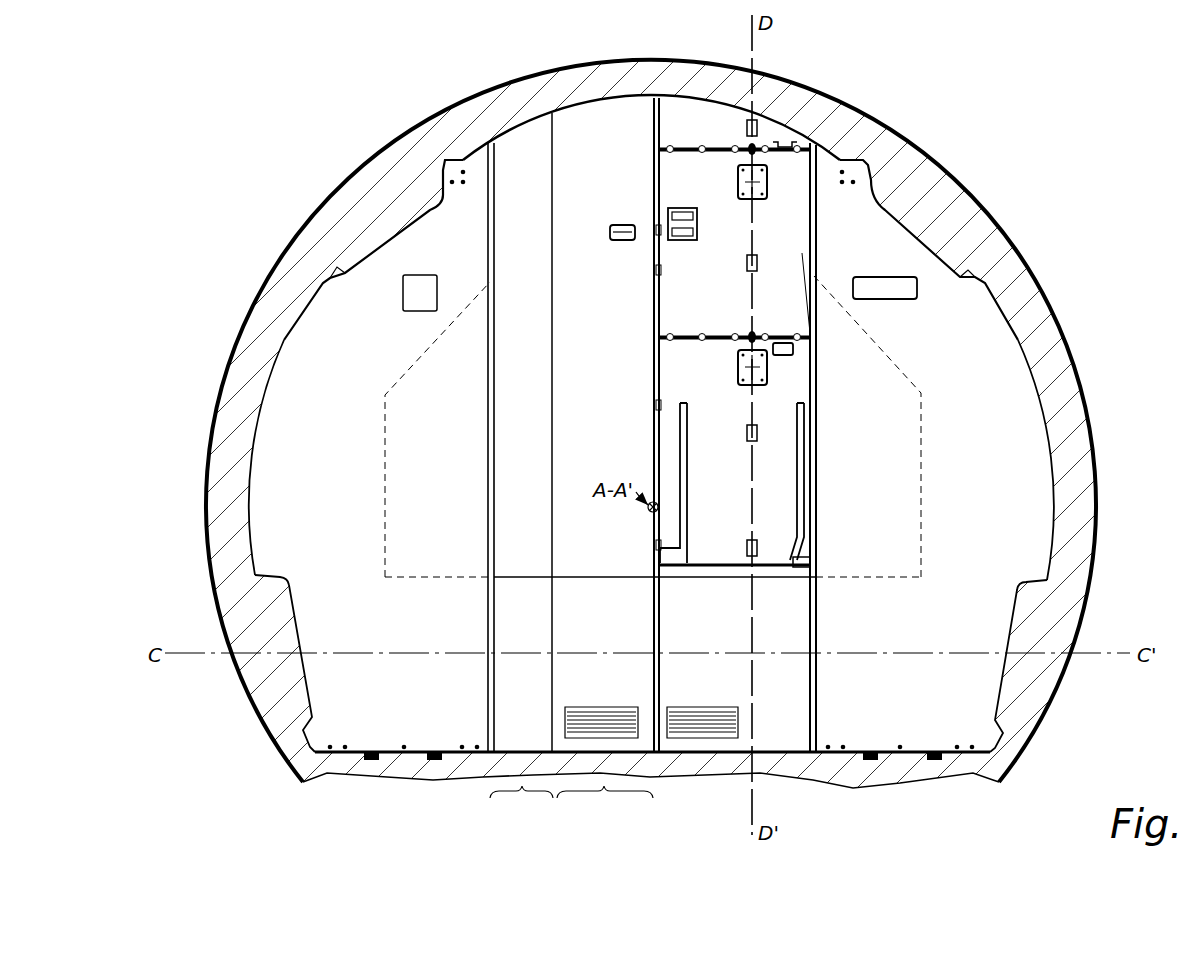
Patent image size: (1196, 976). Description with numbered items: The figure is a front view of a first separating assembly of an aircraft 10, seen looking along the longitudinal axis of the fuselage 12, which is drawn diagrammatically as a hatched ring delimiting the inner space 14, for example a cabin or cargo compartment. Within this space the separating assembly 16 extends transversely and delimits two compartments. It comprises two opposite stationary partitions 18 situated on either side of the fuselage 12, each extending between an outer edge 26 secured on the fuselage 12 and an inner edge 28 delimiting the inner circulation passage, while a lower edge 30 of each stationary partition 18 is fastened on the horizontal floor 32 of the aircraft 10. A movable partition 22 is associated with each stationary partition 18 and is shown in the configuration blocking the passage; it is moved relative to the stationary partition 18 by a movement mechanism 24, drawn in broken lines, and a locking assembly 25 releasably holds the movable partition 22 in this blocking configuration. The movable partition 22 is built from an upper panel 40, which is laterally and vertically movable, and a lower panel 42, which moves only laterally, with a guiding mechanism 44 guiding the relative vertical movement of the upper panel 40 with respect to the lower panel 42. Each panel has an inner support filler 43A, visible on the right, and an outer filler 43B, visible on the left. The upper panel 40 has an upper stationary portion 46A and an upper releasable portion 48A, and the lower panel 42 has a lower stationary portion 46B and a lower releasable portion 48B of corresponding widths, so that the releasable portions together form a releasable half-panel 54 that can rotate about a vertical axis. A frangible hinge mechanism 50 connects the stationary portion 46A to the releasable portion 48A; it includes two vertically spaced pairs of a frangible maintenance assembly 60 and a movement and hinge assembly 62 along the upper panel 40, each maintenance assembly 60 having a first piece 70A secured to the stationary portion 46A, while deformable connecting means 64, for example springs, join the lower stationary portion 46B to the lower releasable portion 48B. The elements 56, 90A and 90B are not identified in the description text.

The aircraft 10 is at (1060, 157).
The fuselage 12 is at (1017, 297).
The inner space 14 is at (689, 309).
The separating assembly 16 is at (872, 212).
The stationary partition 18 is at (267, 480).
The movable partition 22 is at (514, 674).
The movement mechanism 24 is at (423, 553).
The releasable locking assembly 25 is at (666, 196).
The outer edge 26 is at (302, 342).
The inner edge 28 is at (487, 358).
The lower edge 30 is at (390, 752).
The horizontal floor 32 is at (803, 763).
The upper panel 40 is at (648, 368).
The lower panel 42 is at (650, 628).
The inner support filler 43A is at (867, 110).
The outer filler 43B is at (572, 165).
The guiding mechanism 44 is at (818, 491).
The upper stationary portion 46A is at (790, 256).
The lower stationary portion 46B is at (803, 625).
The upper releasable portion 48A is at (675, 287).
The lower releasable portion 48B is at (665, 607).
The frangible hinge mechanism 50 is at (777, 124).
The releasable half-panel 54 is at (605, 806).
The floor zone 56 is at (521, 806).
The frangible maintenance assembly 60 is at (689, 138).
The movement and hinge assembly 62 is at (734, 186).
The deformable connecting means 64 is at (750, 683).
The first piece 70A is at (770, 340).
The shelf 90A is at (767, 357).
The shelf support 90B is at (740, 383).